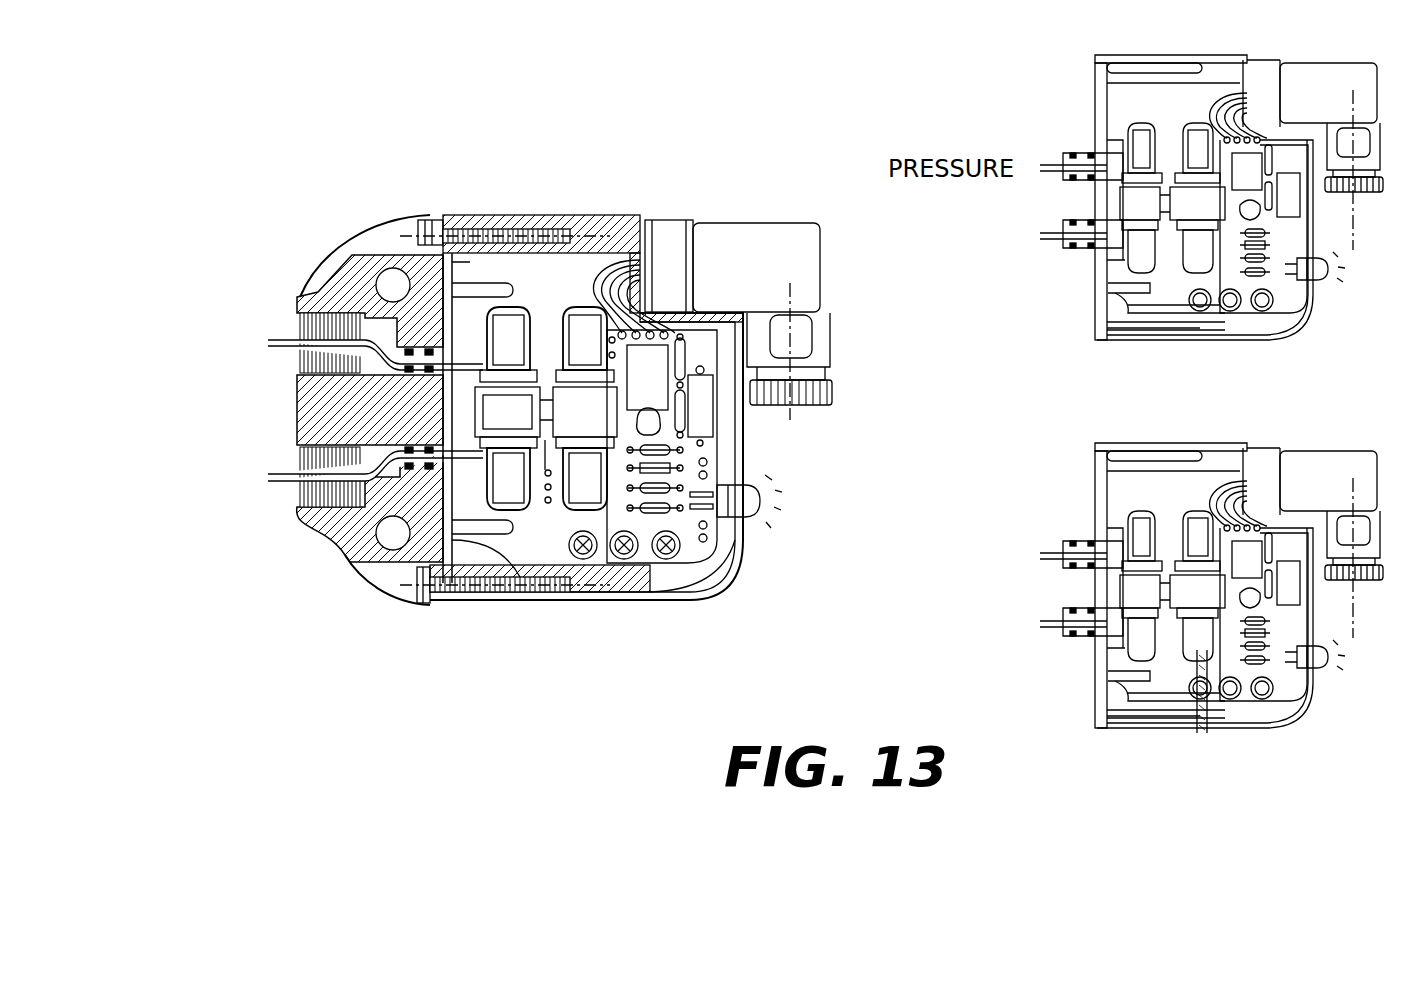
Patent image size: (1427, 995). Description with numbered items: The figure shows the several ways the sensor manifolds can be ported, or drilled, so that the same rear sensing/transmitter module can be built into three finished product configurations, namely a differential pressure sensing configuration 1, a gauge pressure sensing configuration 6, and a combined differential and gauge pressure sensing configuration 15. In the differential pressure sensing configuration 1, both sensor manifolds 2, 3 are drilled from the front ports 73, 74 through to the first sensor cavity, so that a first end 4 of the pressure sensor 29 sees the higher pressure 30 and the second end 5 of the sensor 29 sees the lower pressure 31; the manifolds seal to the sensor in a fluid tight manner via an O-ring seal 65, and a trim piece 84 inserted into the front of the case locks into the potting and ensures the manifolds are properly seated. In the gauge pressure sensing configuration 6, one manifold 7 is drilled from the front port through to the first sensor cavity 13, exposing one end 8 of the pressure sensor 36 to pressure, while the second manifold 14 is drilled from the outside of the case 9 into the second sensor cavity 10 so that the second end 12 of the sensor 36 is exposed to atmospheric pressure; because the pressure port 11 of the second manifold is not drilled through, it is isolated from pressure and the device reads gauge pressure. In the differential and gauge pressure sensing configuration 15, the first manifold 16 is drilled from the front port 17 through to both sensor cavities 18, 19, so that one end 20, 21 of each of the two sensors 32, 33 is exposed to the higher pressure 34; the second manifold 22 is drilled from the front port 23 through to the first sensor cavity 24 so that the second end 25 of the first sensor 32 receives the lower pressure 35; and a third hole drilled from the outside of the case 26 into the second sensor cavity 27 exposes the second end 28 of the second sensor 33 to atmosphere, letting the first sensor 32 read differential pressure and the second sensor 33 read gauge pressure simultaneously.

The differential pressure sensing configuration 1 is at (430, 618).
The sensor manifold 2 is at (465, 353).
The sensor manifold 3 is at (455, 467).
The first end of the sensor 4 is at (510, 330).
The second end of the sensor 5 is at (517, 415).
The gauge pressure sensing configuration 6 is at (1346, 233).
The manifold 7 is at (1112, 157).
The one end of the sensor 8 is at (1147, 130).
The case 9 is at (1100, 270).
The second sensor cavity 10 is at (1140, 273).
The pressure port 11 is at (1066, 247).
The second end of the sensor 12 is at (1148, 263).
The first sensor cavity 13 is at (1143, 137).
The second manifold 14 is at (1088, 255).
The differential and gauge pressure sensing configuration 15 is at (1342, 620).
The first manifold 16 is at (1122, 540).
The front port 17 is at (1068, 548).
The sensor cavity 18 is at (1165, 556).
The sensor cavity 19 is at (1260, 520).
The one end of the first sensor 20 is at (1145, 517).
The one end of the second sensor 21 is at (1220, 508).
The second manifold 22 is at (1110, 640).
The front port 23 is at (1066, 636).
The first sensor cavity 24 is at (1150, 650).
The second end of the first sensor 25 is at (1195, 660).
The case 26 is at (1205, 640).
The second sensor cavity 27 is at (1230, 690).
The second end of the second sensor 28 is at (1290, 667).
The pressure sensor 29 is at (530, 450).
The higher pressure 30 is at (299, 344).
The lower pressure 31 is at (301, 487).
The first sensor 32 is at (1140, 660).
The second sensor 33 is at (1205, 594).
The higher pressure 34 is at (969, 546).
The lower pressure 35 is at (971, 613).
The pressure sensor 36 is at (1143, 203).
The O-ring seal 65 is at (532, 372).
The front port 73 is at (375, 320).
The front port 74 is at (333, 433).
The trim piece 84 is at (428, 586).